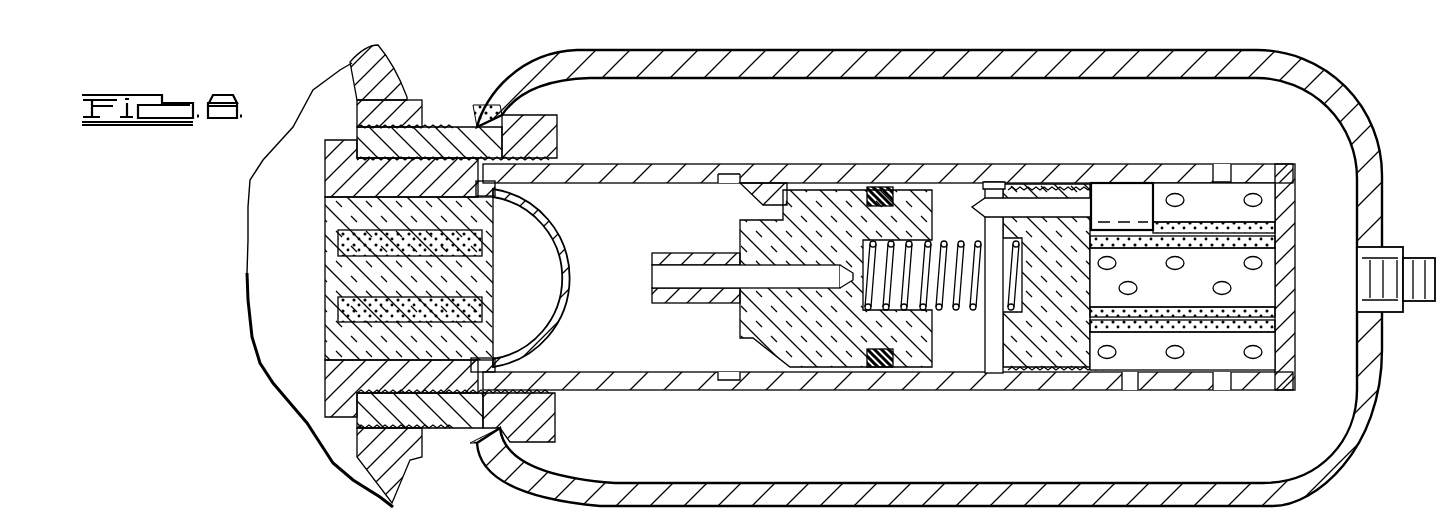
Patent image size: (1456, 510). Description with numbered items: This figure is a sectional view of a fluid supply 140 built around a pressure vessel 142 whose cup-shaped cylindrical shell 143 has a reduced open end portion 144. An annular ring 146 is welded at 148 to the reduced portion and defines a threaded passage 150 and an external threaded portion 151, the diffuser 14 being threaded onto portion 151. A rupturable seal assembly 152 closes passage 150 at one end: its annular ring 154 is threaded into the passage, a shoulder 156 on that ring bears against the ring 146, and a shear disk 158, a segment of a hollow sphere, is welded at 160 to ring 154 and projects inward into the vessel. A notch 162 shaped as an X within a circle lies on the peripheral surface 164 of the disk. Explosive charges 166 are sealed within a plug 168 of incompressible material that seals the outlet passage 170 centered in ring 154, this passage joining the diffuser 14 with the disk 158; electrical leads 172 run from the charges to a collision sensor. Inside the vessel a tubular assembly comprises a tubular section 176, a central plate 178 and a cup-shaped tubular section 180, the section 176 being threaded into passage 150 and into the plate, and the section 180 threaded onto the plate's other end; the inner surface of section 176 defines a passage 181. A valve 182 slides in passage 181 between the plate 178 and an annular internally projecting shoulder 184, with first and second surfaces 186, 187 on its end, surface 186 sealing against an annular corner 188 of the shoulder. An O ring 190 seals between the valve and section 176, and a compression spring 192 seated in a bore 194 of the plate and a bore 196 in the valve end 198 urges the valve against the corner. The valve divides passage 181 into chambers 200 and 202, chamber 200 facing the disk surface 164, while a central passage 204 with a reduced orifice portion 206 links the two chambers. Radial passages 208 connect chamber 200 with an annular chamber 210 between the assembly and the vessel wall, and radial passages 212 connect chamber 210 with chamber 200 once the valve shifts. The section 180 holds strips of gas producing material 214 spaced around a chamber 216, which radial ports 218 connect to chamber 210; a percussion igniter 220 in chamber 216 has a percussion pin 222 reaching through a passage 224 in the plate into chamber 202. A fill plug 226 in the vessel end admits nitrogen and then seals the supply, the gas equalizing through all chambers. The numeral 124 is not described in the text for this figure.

The diffuser 14 is at (348, 53).
The inner housing 124 is at (888, 418).
The fluid supply 140 is at (1333, 477).
The pressure vessel 142 is at (1325, 62).
The cup-shaped cylindrical shell 143 is at (840, 78).
The reduced open end portion 144 is at (503, 466).
The annular ring 146 is at (445, 405).
The weld 148 is at (505, 432).
The threaded passage 150 is at (401, 300).
The external threaded portion 151 is at (418, 100).
The rupturable seal assembly 152 is at (322, 403).
The annular ring 154 is at (327, 388).
The shoulder 156 is at (340, 427).
The shear disk 158 is at (560, 320).
The weld 160 is at (488, 366).
The notch 162 is at (566, 272).
The peripheral surface 164 is at (556, 322).
The explosive charges 166 is at (410, 276).
The plug 168 is at (414, 275).
The outlet passage 170 is at (335, 205).
The electrical leads 172 is at (340, 303).
The tubular section 176 is at (905, 397).
The central plate 178 is at (1047, 388).
The cup-shaped tubular section 180 is at (1163, 384).
The passage 181 is at (975, 360).
The valve 182 is at (852, 339).
The annular internally projecting shoulder 184 is at (760, 378).
The first surface 186 is at (793, 365).
The second surface 187 is at (783, 312).
The annular corner 188 is at (782, 205).
The O ring 190 is at (847, 205).
The compression spring 192 is at (962, 240).
The bore 194 is at (1053, 277).
The bore 196 is at (893, 242).
The end 198 is at (953, 242).
The chamber 200 is at (725, 286).
The chamber 202 is at (975, 351).
The passage 204 is at (752, 352).
The reduced orifice portion 206 is at (811, 225).
The radial passages 208 is at (737, 178).
The annular chamber 210 is at (640, 456).
The radial passages 212 is at (868, 190).
The strips of gas producing material 214 is at (1273, 228).
The chamber 216 is at (1190, 303).
The radial ports 218 is at (1227, 172).
The percussion igniter 220 is at (1140, 221).
The percussion pin 222 is at (1083, 195).
The passage 224 is at (1023, 207).
The fill plug 226 is at (1415, 242).